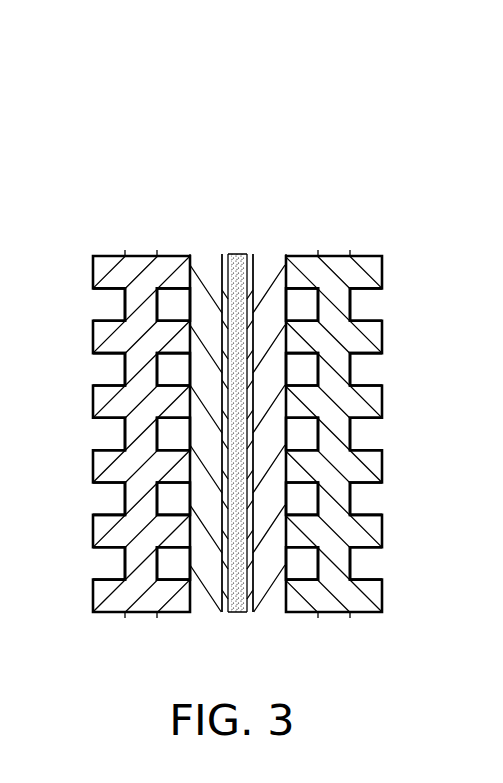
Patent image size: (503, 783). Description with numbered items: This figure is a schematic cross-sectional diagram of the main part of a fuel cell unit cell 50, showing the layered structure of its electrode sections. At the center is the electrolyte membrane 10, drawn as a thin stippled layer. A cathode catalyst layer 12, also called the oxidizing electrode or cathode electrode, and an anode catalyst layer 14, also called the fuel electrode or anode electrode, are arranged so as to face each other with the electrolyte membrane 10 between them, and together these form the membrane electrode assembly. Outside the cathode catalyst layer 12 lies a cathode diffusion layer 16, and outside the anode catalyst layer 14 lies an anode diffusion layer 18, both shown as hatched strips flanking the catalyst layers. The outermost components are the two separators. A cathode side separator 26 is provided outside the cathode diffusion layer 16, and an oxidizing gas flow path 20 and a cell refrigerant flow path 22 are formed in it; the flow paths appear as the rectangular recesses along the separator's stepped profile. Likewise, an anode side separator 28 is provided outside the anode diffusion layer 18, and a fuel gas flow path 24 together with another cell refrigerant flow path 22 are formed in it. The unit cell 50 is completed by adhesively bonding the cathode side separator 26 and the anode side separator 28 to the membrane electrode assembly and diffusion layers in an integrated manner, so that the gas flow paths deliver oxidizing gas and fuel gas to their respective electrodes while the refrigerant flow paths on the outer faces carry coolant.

The unit cell 50 is at (92, 108).
The electrolyte membrane 10 is at (240, 254).
The cathode catalyst layer 12 is at (229, 254).
The anode catalyst layer 14 is at (250, 254).
The cathode diffusion layer 16 is at (210, 262).
The anode diffusion layer 18 is at (270, 262).
The oxidizing gas flow path 20 is at (173, 303).
The cell refrigerant flow path 22 is at (113, 303).
The fuel gas flow path 24 is at (303, 303).
The cathode side separator 26 is at (143, 262).
The anode side separator 28 is at (333, 267).